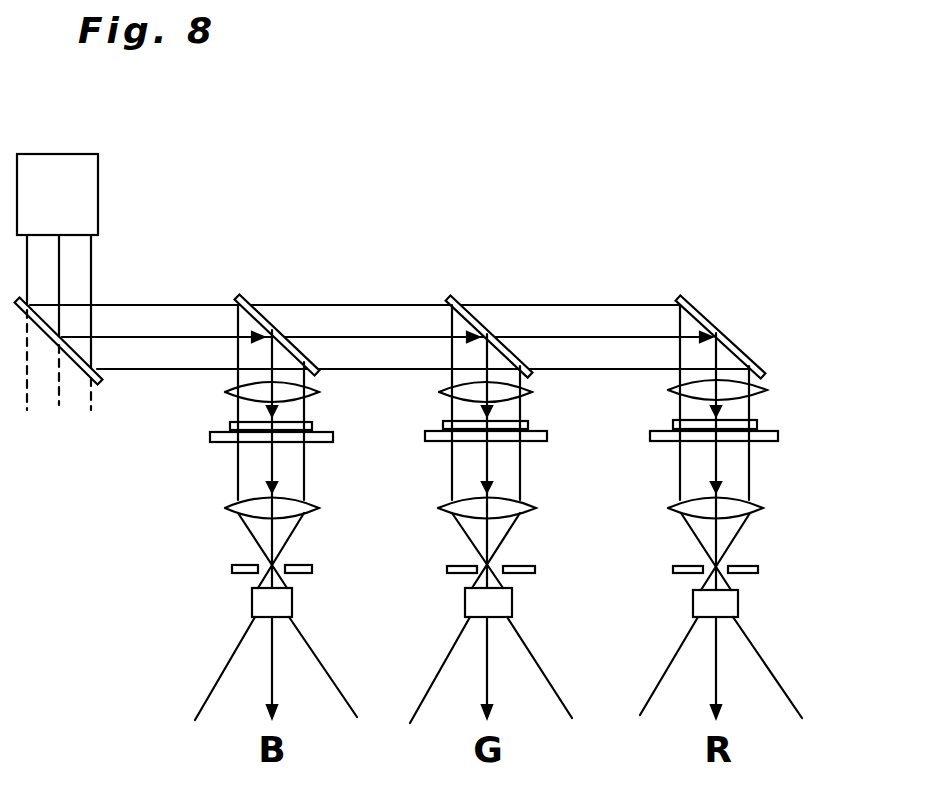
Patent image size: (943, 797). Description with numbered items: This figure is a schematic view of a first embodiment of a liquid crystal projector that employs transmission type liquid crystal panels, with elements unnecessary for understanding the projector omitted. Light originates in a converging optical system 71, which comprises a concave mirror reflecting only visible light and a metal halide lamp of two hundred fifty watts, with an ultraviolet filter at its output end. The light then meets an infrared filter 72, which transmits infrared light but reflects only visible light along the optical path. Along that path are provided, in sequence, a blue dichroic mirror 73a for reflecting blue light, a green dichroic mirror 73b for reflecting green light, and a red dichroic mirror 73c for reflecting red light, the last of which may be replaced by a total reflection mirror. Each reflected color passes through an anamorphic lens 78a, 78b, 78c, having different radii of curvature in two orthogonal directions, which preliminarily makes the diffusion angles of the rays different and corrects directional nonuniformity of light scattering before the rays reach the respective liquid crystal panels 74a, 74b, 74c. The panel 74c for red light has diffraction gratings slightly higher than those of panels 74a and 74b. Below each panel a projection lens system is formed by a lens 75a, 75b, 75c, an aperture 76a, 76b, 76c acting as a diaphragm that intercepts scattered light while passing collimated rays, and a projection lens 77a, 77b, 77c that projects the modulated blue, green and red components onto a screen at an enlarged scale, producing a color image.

The converging optical system 71 is at (98, 187).
The infrared filter 72 is at (45, 328).
The blue dichroic mirror 73a is at (240, 295).
The green dichroic mirror 73b is at (455, 297).
The red dichroic mirror 73c is at (693, 298).
The liquid crystal panel 74a is at (333, 437).
The liquid crystal panel 74b is at (547, 438).
The liquid crystal panel 74c is at (778, 436).
The lens 75a is at (319, 508).
The lens 75b is at (537, 507).
The lens 75c is at (763, 507).
The aperture 76a is at (312, 568).
The aperture 76b is at (535, 568).
The aperture 76c is at (758, 568).
The projection lens 77a is at (292, 600).
The projection lens 77b is at (512, 602).
The projection lens 77c is at (738, 603).
The anamorphic lens 78a is at (319, 392).
The anamorphic lens 78b is at (532, 392).
The anamorphic lens 78c is at (767, 390).